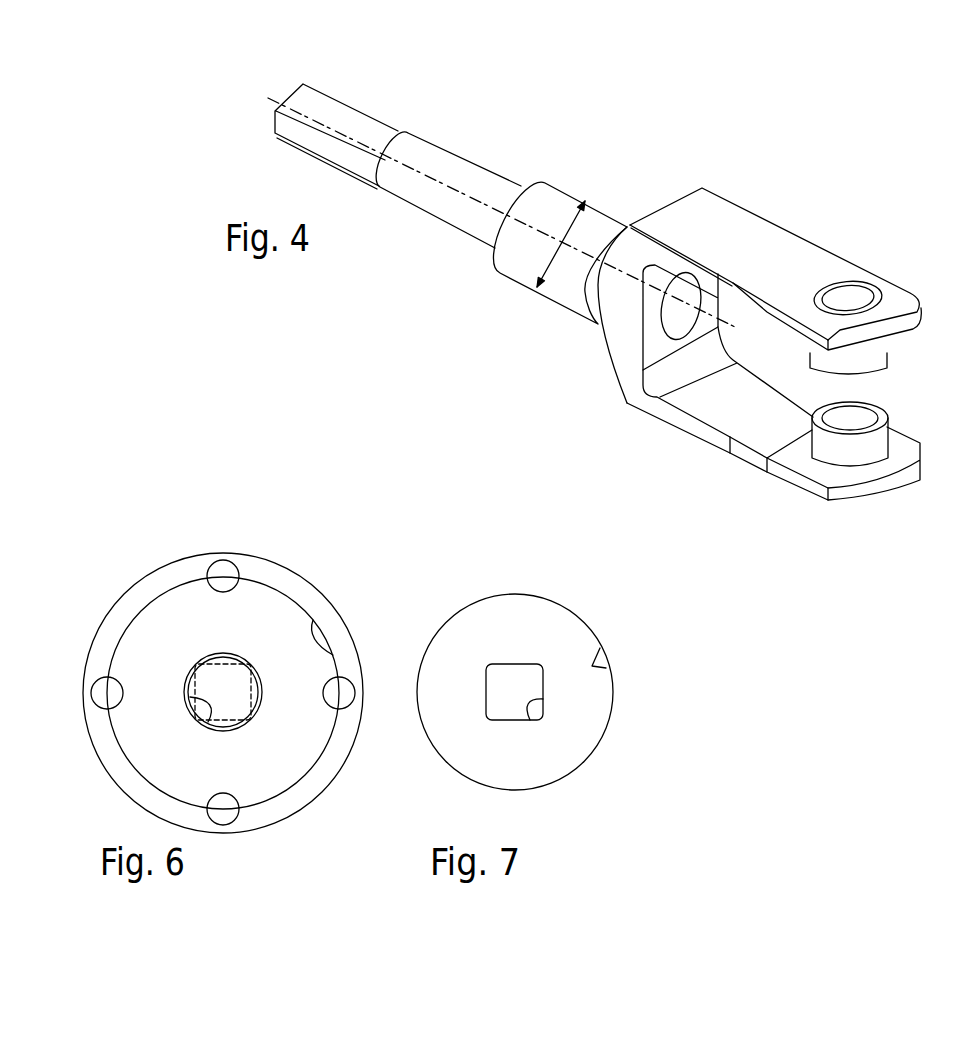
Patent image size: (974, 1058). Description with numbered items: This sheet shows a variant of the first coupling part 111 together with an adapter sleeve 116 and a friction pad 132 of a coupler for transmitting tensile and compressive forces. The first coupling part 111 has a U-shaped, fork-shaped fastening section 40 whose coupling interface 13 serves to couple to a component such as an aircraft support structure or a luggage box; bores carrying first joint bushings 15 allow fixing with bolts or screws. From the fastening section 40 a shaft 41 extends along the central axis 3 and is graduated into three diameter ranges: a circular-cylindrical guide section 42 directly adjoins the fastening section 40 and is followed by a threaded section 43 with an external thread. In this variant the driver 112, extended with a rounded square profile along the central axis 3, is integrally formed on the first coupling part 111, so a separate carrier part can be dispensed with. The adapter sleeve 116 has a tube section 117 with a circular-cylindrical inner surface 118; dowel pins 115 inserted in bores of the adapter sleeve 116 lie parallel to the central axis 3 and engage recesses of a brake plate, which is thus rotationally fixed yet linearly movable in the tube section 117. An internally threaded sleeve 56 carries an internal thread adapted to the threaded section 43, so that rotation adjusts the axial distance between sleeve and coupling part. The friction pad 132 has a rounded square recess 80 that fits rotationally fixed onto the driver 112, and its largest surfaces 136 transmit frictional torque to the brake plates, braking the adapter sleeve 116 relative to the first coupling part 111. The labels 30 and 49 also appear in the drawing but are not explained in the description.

In FIG. 4, the central axis 3 is at (453, 187).
In FIG. 4, the coupling interface 13 is at (787, 363).
In FIG. 4, the first joint bushings 15 is at (842, 453).
In FIG. 6, the central opening 30 is at (223, 653).
In FIG. 4, the fastening section 40 is at (759, 332).
In FIG. 4, the shaft 41 is at (509, 238).
In FIG. 4, the guide section 42 is at (557, 287).
In FIG. 4, the threaded section 43 is at (458, 222).
In FIG. 4, the diameter 49 is at (573, 232).
In FIG. 6, the internally threaded sleeve 56 is at (226, 683).
In FIG. 7, the recess 80 is at (527, 717).
In FIG. 4, the first coupling part 111 is at (594, 302).
In FIG. 4, the driver 112 is at (337, 110).
In FIG. 6, the driver 112 is at (207, 717).
In FIG. 6, the dowel pins 115 is at (225, 566).
In FIG. 6, the adapter sleeve 116 is at (303, 808).
In FIG. 6, the tube section 117 is at (117, 622).
In FIG. 6, the inner surface 118 is at (311, 637).
In FIG. 7, the friction pad 132 is at (537, 680).
In FIG. 7, the largest surfaces 136 is at (607, 667).